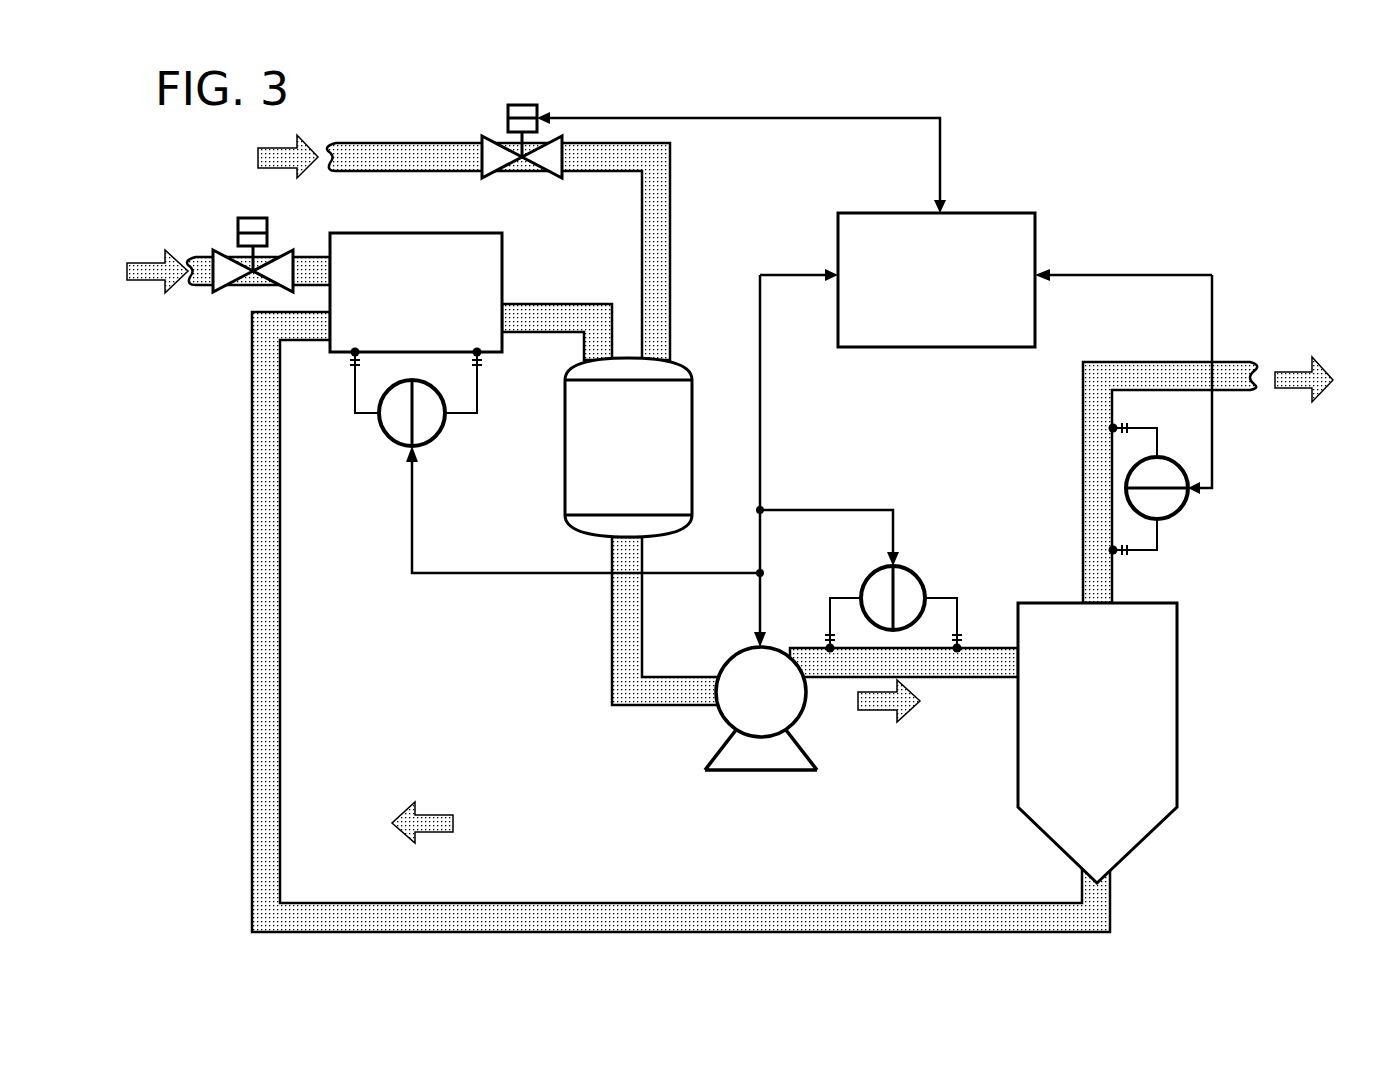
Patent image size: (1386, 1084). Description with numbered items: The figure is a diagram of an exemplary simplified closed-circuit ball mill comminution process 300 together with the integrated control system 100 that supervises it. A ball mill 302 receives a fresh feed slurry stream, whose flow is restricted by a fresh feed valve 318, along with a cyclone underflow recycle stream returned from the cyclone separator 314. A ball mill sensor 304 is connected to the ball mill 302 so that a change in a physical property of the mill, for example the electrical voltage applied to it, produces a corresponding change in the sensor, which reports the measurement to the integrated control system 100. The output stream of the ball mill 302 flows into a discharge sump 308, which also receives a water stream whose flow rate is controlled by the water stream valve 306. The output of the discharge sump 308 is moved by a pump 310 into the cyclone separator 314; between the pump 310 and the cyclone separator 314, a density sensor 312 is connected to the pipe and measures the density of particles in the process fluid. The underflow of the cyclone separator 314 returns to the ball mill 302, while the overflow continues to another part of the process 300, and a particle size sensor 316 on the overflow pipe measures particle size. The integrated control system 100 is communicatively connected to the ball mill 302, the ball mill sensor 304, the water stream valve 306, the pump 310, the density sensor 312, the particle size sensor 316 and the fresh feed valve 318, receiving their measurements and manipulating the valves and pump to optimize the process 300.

The integrated control system 100 is at (936, 280).
The ball mill process 300 is at (1132, 125).
The ball mill 302 is at (416, 292).
The ball mill sensor 304 is at (383, 433).
The water stream valve 306 is at (520, 105).
The discharge sump 308 is at (628, 447).
The pump 310 is at (716, 715).
The density sensor 312 is at (907, 567).
The cyclone separator 314 is at (1097, 743).
The particle size sensor 316 is at (1180, 512).
The fresh feed valve 318 is at (245, 218).